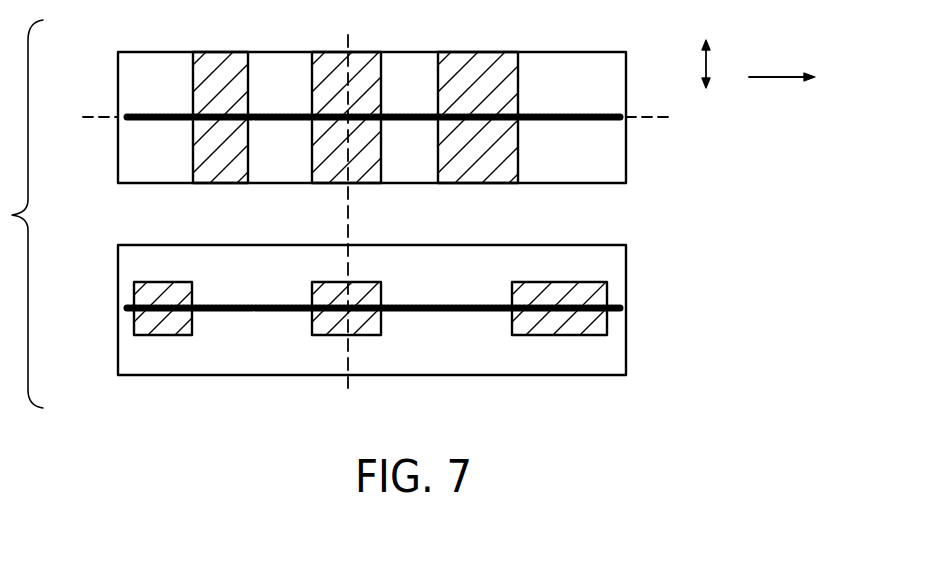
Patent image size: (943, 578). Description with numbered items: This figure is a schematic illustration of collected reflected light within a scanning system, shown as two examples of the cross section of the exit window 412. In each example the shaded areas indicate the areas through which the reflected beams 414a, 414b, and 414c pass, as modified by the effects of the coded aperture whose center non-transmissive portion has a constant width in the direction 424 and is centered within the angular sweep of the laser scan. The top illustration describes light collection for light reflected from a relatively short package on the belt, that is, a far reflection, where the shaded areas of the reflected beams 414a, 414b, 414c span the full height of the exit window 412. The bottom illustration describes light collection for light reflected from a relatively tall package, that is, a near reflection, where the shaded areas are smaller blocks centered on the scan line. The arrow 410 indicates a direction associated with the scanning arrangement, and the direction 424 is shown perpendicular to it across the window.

The feed direction 410 is at (776, 77).
The exit window 412 is at (118, 170).
The reflected beam 414a is at (248, 62).
The reflected beam 414b is at (381, 62).
The reflected beam 414c is at (518, 90).
The direction 424 is at (706, 67).